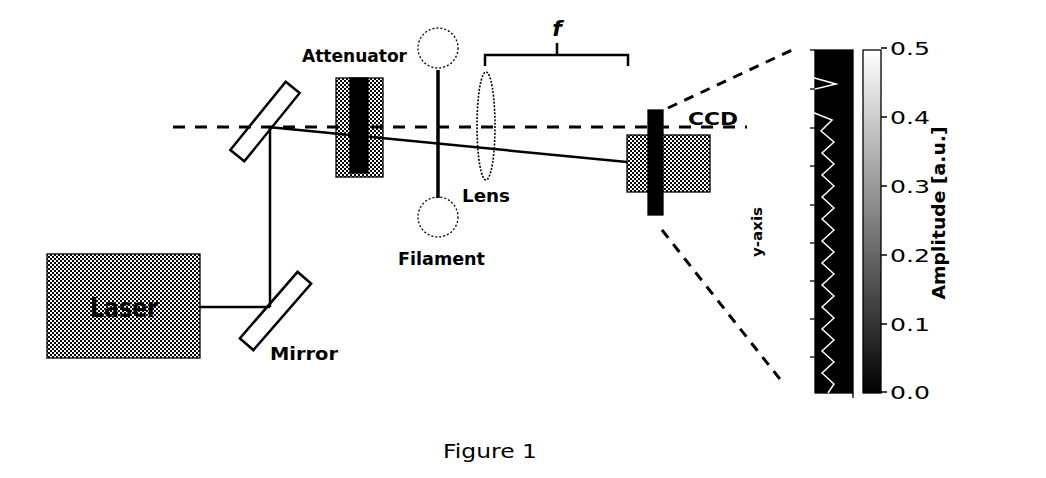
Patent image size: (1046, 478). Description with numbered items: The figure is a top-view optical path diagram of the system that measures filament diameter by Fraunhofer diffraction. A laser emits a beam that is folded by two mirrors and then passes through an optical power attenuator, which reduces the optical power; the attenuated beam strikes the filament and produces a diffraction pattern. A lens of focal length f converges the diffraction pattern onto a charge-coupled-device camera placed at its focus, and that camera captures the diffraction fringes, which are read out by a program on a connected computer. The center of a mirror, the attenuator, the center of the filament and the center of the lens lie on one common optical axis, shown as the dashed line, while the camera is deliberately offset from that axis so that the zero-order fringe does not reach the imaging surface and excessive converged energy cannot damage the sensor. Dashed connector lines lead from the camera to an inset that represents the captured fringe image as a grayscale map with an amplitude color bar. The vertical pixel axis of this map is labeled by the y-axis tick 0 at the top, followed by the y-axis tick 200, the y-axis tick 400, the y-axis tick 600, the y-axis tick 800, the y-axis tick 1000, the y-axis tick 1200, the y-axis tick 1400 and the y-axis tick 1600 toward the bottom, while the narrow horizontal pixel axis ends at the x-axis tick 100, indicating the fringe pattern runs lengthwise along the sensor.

The y-axis origin tick 0 is at (806, 50).
The y-axis tick 200 is at (795, 89).
The y-axis tick 400 is at (795, 128).
The y-axis tick 600 is at (795, 166).
The y-axis tick 800 is at (795, 205).
The y-axis tick 1000 is at (790, 243).
The y-axis tick 1200 is at (790, 281).
The y-axis tick 1400 is at (790, 319).
The y-axis tick 1600 is at (790, 357).
The x-axis tick 100 is at (833, 408).